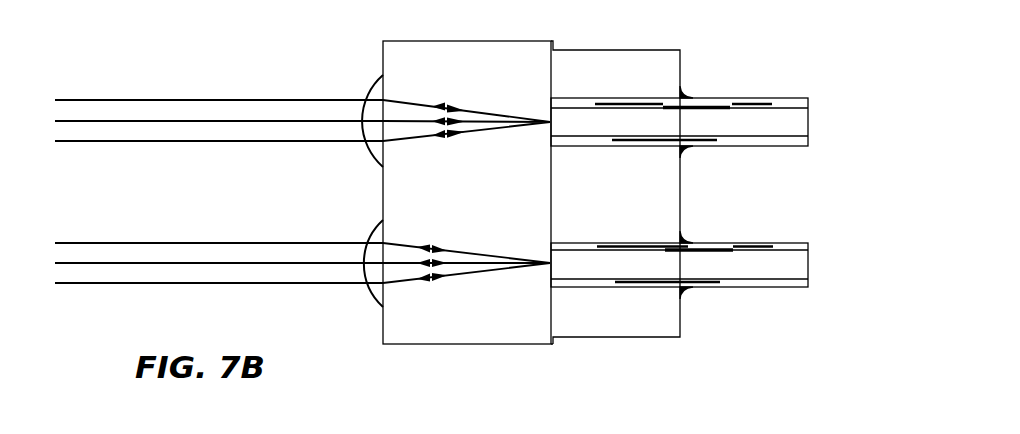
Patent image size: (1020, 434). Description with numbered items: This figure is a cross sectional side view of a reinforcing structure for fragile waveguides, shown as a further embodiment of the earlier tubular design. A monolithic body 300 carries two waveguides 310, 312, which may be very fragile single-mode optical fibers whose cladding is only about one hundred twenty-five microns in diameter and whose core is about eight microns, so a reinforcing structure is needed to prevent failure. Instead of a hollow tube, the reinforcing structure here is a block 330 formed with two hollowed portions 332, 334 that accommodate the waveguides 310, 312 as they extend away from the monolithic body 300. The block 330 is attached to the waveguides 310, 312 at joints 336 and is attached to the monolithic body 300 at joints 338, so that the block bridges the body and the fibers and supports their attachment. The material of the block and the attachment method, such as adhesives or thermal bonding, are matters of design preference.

The monolithic body 300 is at (432, 58).
The block 330 is at (600, 70).
The hollowed portion 332 is at (628, 99).
The hollowed portion 334 is at (628, 243).
The joints 336 is at (683, 290).
The joints 338 is at (553, 344).
The waveguide 310 is at (790, 124).
The waveguide 312 is at (792, 265).